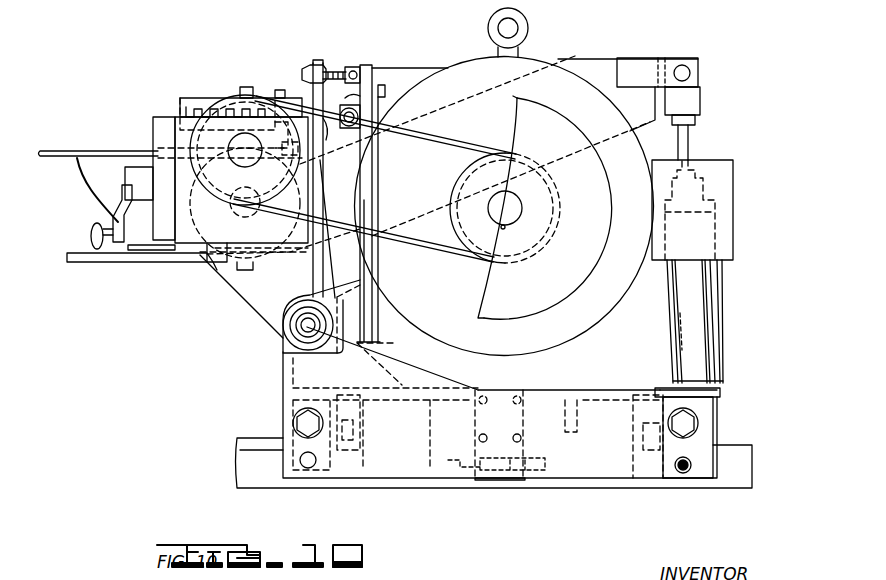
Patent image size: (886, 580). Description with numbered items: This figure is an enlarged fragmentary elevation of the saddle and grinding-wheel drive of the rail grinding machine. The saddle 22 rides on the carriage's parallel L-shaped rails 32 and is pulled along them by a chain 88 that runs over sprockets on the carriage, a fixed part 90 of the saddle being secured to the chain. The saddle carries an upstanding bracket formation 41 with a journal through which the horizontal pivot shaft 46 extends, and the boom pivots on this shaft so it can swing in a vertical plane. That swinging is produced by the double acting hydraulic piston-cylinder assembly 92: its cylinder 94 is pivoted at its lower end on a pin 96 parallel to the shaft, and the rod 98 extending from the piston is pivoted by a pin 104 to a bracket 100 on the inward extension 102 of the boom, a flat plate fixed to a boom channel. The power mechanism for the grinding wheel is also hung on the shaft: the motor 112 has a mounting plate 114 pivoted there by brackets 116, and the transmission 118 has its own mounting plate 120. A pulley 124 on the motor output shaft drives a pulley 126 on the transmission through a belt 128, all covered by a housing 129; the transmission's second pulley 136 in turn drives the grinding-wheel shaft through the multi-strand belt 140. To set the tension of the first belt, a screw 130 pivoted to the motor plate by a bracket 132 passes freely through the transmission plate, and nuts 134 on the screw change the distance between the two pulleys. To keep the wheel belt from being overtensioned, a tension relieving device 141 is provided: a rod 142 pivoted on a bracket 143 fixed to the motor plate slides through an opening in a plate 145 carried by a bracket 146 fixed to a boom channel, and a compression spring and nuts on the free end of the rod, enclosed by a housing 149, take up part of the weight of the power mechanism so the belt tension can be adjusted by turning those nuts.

The saddle 22 is at (283, 418).
The rails 32 is at (250, 470).
The bracket formation 41 is at (292, 365).
The pivot shaft 46 is at (307, 327).
The chain 88 is at (540, 468).
The fixed part 90 is at (523, 446).
The piston-cylinder assembly 92 is at (730, 320).
The cylinder 94 is at (713, 340).
The pin 96 is at (722, 414).
The rod 98 is at (692, 146).
The bracket 100 is at (642, 62).
The inward extension 102 is at (575, 64).
The pin 104 is at (690, 73).
The motor 112 is at (530, 357).
The mounting plate 114 is at (372, 184).
The brackets 116 is at (348, 305).
The transmission 118 is at (163, 128).
The mounting plate 120 is at (322, 64).
The pulley 124 is at (527, 233).
The pulley 126 is at (252, 192).
The belt 128 is at (409, 246).
The housing 129 is at (572, 266).
The screw 130 is at (341, 68).
The bracket 132 is at (360, 66).
The nuts 134 is at (310, 72).
The second pulley 136 is at (208, 262).
The belt 140 is at (55, 150).
The tension relieving device 141 is at (213, 100).
The rod 142 is at (323, 118).
The bracket 143 is at (372, 113).
The plate 145 is at (283, 90).
The bracket 146 is at (318, 158).
The housing 149 is at (182, 97).